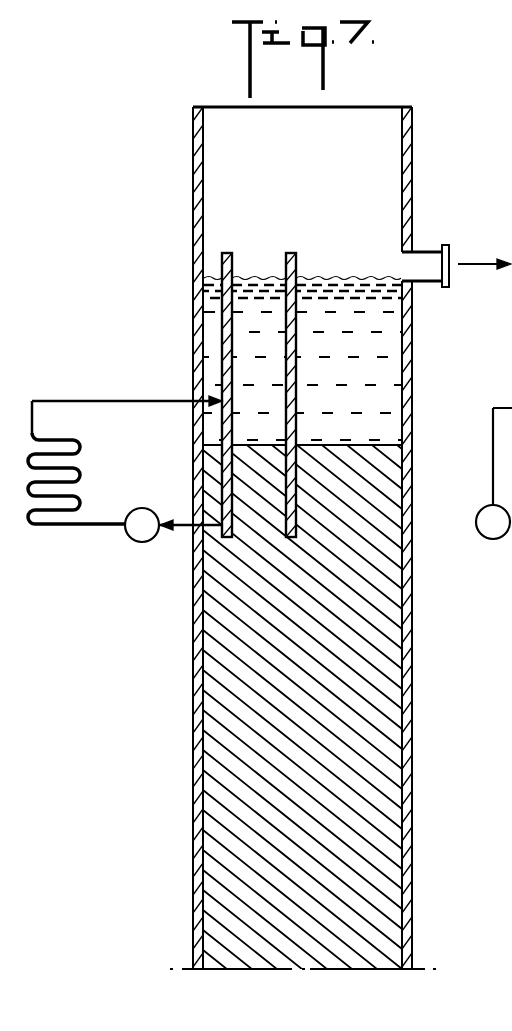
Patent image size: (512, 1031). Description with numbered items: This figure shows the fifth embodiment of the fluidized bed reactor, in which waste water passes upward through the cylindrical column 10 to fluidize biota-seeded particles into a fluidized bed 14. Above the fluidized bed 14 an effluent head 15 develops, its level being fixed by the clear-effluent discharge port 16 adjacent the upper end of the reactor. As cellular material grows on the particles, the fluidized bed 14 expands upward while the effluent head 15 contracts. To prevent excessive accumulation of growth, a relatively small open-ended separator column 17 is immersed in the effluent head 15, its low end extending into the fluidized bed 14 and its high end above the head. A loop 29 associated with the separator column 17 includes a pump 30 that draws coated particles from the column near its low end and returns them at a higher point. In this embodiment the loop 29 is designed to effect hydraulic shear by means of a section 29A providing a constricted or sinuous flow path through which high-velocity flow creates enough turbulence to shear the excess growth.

The cylindrical column 10 is at (404, 204).
The fluidized bed 14 is at (382, 685).
The effluent head 15 is at (356, 277).
The clear-effluent discharge port 16 is at (424, 282).
The separator column 17 is at (298, 252).
The loop 29 is at (92, 532).
The section of the loop 29A is at (80, 473).
The pump 30 is at (144, 548).